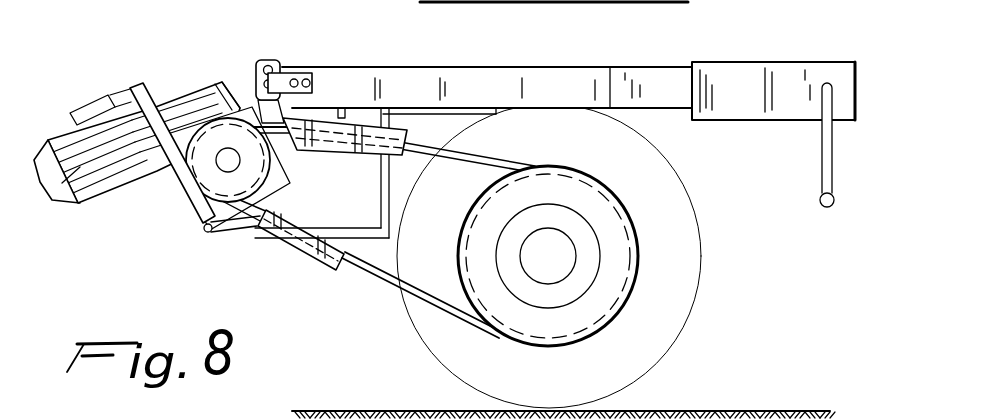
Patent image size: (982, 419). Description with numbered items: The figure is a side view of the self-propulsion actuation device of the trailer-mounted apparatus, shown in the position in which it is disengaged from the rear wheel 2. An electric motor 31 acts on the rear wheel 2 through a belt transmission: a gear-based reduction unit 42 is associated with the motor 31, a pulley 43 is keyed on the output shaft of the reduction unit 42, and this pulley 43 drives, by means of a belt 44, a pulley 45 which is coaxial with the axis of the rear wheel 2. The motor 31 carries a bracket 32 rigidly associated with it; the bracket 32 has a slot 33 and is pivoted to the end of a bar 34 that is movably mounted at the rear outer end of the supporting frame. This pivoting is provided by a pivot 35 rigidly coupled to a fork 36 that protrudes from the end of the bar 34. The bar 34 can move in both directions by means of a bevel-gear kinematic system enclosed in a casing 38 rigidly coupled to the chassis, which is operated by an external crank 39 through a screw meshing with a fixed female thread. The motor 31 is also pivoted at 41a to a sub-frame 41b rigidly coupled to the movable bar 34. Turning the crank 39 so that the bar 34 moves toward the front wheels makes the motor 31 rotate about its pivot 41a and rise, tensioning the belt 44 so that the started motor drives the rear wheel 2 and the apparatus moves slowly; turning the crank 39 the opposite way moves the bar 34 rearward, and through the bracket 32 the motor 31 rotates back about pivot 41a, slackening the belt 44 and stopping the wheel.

The rear wheel 2 is at (660, 358).
The electric motor 31 is at (55, 201).
The bracket 32 is at (251, 95).
The slot 33 is at (277, 62).
The bar 34 is at (410, 90).
The pivot 35 is at (307, 65).
The fork 36 is at (312, 150).
The casing 38 is at (768, 72).
The external crank 39 is at (822, 162).
The pivot 41a is at (210, 237).
The sub-frame 41b is at (248, 238).
The gear-based reduction unit 42 is at (198, 222).
The pulley 43 is at (193, 182).
The belt 44 is at (380, 262).
The pulley 45 is at (513, 313).